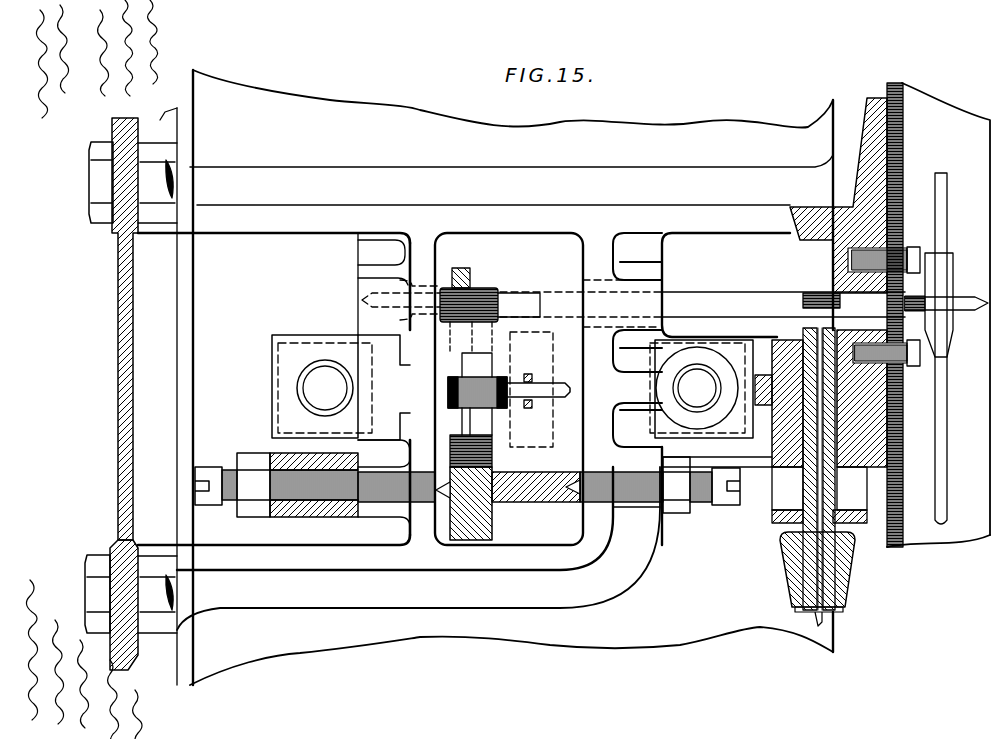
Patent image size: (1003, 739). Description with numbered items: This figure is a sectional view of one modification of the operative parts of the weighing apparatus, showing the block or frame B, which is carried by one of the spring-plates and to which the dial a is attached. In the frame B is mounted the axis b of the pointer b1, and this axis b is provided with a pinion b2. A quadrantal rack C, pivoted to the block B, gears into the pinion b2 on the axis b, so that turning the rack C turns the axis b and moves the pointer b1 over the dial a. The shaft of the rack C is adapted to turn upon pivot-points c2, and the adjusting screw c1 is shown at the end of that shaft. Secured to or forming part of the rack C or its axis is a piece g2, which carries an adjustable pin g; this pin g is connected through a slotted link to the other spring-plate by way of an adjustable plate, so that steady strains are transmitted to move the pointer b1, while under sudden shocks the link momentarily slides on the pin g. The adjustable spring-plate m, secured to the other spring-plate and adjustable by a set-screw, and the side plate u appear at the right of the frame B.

The frame B is at (485, 377).
The quadrantal rack C is at (461, 267).
The axis of the pointer b is at (744, 304).
The pointer b1 is at (945, 348).
The pinion b2 is at (490, 292).
The adjusting screw c1 is at (315, 485).
The pivot-points c2 is at (650, 489).
The adjustable pin g is at (509, 384).
The piece g2 is at (492, 512).
The dial a is at (890, 299).
The side plate u is at (938, 315).
The adjustable spring-plate m is at (822, 477).